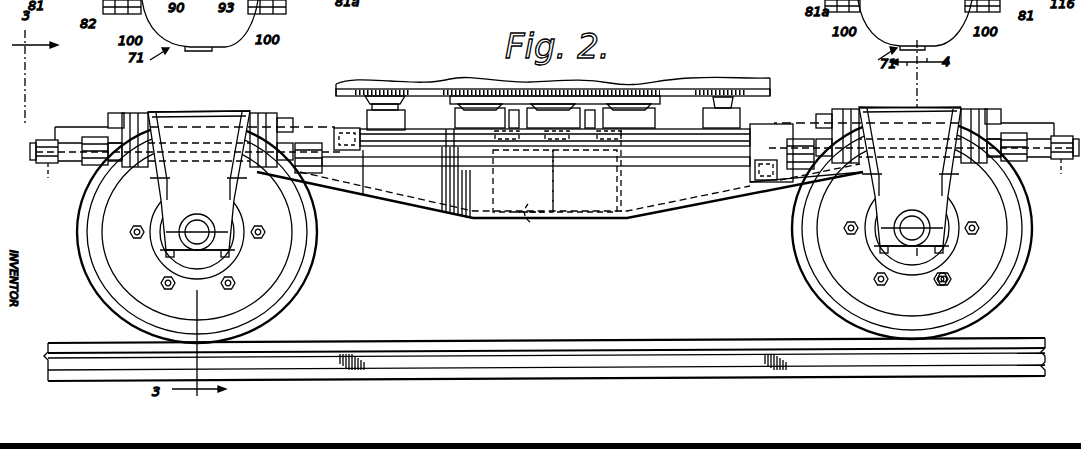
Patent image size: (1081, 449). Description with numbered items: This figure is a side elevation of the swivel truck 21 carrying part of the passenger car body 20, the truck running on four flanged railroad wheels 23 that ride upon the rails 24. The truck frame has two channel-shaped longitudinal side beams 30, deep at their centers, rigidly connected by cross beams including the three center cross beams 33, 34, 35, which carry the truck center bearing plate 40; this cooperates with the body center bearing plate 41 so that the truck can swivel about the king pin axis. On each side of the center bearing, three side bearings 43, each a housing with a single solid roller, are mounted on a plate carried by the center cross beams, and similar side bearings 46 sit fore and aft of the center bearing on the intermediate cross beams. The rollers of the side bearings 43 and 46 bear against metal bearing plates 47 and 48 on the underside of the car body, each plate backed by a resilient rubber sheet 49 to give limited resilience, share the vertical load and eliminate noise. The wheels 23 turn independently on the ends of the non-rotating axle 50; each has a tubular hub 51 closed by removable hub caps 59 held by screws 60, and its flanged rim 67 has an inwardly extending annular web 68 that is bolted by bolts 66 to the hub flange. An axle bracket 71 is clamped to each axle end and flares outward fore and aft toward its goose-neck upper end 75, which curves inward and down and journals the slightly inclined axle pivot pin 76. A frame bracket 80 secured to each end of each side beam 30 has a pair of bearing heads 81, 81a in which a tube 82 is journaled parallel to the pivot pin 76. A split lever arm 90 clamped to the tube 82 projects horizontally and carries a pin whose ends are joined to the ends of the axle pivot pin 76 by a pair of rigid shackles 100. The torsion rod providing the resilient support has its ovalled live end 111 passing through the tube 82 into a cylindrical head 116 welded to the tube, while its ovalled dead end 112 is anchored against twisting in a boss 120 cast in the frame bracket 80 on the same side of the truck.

The passenger car body 20 is at (704, 80).
The swivel truck 21 is at (462, 220).
The flanged railroad wheel 23 is at (318, 281).
The rail 24 is at (576, 340).
The longitudinal side beam 30 is at (652, 208).
The center cross beam 33 is at (523, 181).
The center cross beam 34 is at (530, 222).
The center cross beam 35 is at (587, 171).
The truck center bearing plate 40 is at (524, 140).
The body center bearing plate 41 is at (522, 100).
The side bearing 43 is at (555, 118).
The side bearing 46 is at (740, 119).
The metal bearing plate 47 is at (470, 96).
The metal bearing plate 48 is at (400, 89).
The rubber backing sheet 49 is at (376, 89).
The axle 50 is at (186, 240).
The tubular hub 51 is at (233, 252).
The hub cap 59 is at (238, 222).
The screw 60 is at (334, 196).
The bolt 66 is at (168, 288).
The flanged rim 67 is at (262, 316).
The annular web 68 is at (940, 290).
The axle bracket 71 is at (232, 102).
The upper end of axle bracket 75 is at (178, 110).
The axle pivot pin 76 is at (340, 128).
The frame bracket 80 is at (796, 118).
The bearing head 81 is at (90, 136).
The bearing head 81a is at (306, 140).
The tube 82 is at (70, 166).
The lever arm 90 is at (160, 190).
The shackle 100 is at (264, 112).
The live end of torsion rod 111 is at (46, 166).
The dead end of torsion rod 112 is at (766, 182).
The cylindrical head 116 is at (44, 139).
The boss 120 is at (750, 176).